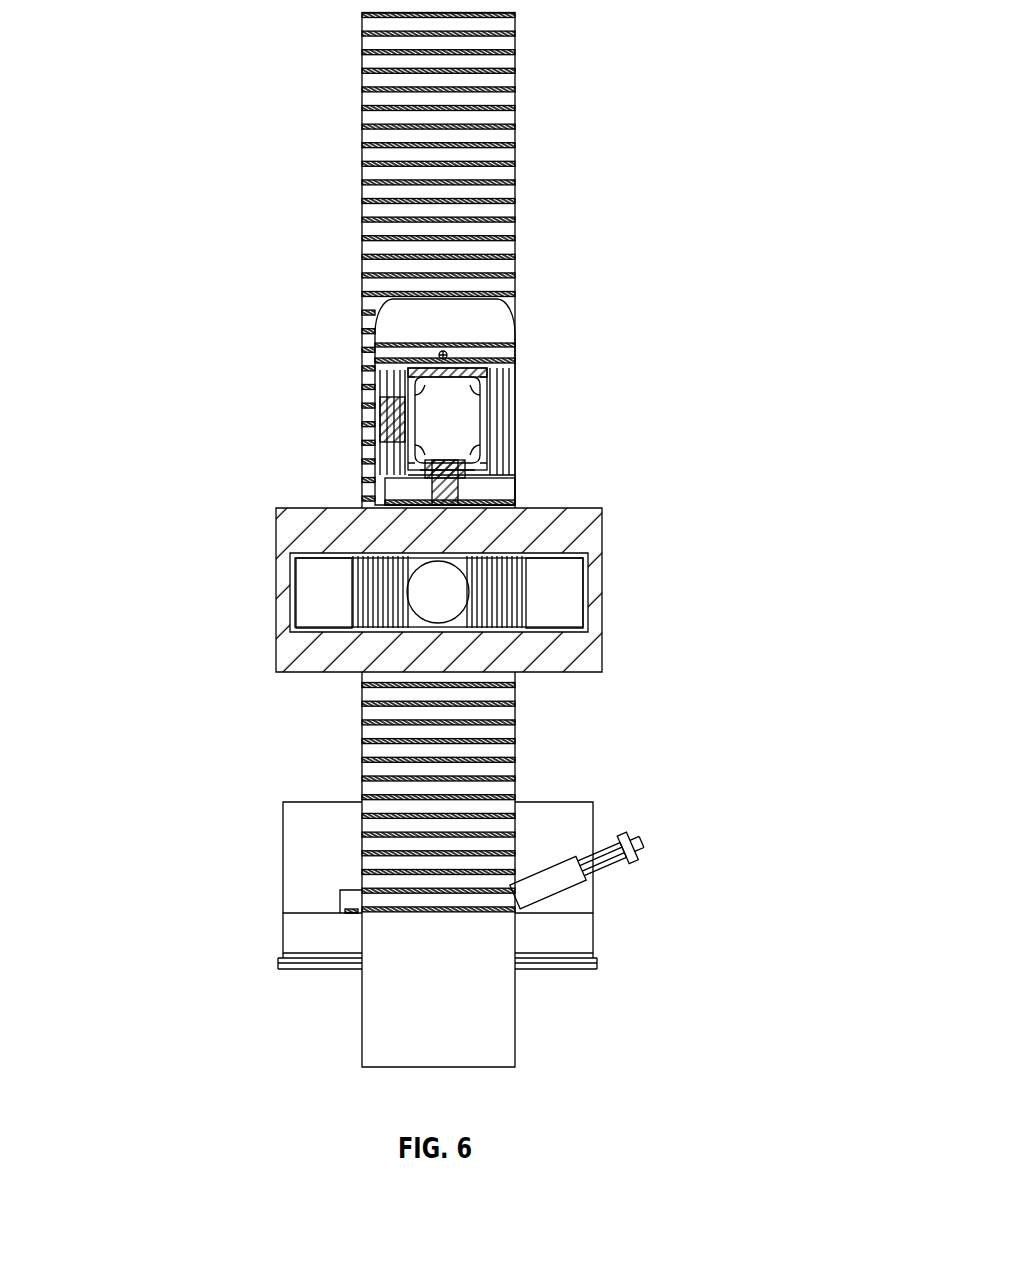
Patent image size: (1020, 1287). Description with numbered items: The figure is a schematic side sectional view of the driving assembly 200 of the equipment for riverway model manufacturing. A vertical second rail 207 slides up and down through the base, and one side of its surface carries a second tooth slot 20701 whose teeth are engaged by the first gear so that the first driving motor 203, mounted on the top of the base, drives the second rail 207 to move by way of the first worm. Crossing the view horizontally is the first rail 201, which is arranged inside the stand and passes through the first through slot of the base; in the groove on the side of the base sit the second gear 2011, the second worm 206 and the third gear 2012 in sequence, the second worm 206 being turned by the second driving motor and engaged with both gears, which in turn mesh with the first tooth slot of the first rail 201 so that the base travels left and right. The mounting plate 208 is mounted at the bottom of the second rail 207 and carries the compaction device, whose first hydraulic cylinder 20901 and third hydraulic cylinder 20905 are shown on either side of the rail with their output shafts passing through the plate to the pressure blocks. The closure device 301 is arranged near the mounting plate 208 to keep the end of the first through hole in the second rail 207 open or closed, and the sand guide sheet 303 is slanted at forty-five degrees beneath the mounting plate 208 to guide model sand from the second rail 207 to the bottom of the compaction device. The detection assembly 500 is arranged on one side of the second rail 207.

The driving assembly 200 is at (598, 343).
The second rail 207 is at (463, 125).
The second tooth slot 20701 is at (410, 230).
The first driving motor 203 is at (418, 330).
The second gear 2011 is at (388, 573).
The third gear 2012 is at (497, 568).
The first rail 201 is at (319, 611).
The second worm 206 is at (438, 603).
The third hydraulic cylinder 20905 is at (332, 812).
The first hydraulic cylinder 20901 is at (552, 807).
The detection assembly 500 is at (352, 897).
The closure device 301 is at (575, 869).
The mounting plate 208 is at (555, 935).
The sand guide sheet 303 is at (405, 1038).